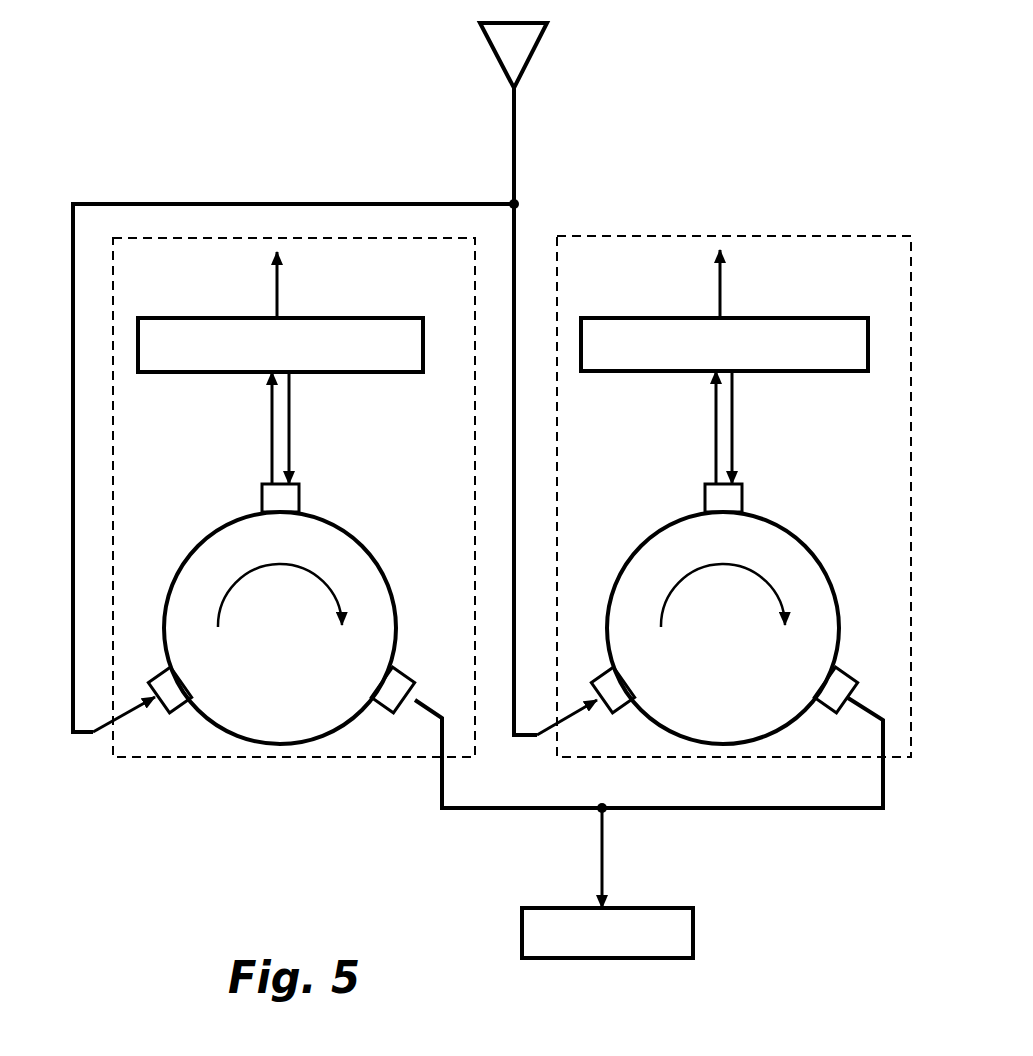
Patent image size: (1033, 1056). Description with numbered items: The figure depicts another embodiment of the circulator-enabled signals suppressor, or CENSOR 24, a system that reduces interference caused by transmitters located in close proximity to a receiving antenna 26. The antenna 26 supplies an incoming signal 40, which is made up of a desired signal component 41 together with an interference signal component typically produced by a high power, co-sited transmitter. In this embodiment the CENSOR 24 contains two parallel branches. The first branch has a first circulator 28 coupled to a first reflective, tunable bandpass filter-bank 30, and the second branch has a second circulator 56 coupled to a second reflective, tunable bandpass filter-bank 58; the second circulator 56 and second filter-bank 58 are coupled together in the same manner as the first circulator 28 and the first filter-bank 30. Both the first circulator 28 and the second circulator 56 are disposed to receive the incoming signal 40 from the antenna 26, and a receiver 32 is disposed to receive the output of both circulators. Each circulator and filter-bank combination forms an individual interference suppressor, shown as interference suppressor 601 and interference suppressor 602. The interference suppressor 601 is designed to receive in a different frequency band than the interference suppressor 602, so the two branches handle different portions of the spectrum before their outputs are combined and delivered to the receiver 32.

The circulator-enabled signals suppressor (CENSOR) 24 is at (775, 97).
The antenna 26 is at (533, 62).
The incoming signal 40 is at (514, 125).
The interference suppressor 601 is at (120, 757).
The interference suppressor 602 is at (855, 236).
The first reflective, tunable bandpass filter-bank 30 is at (260, 357).
The first circulator 28 is at (261, 668).
The second reflective, tunable bandpass filter-bank 58 is at (703, 357).
The second circulator 56 is at (704, 668).
The desired signal component 41 is at (600, 870).
The receiver 32 is at (588, 948).